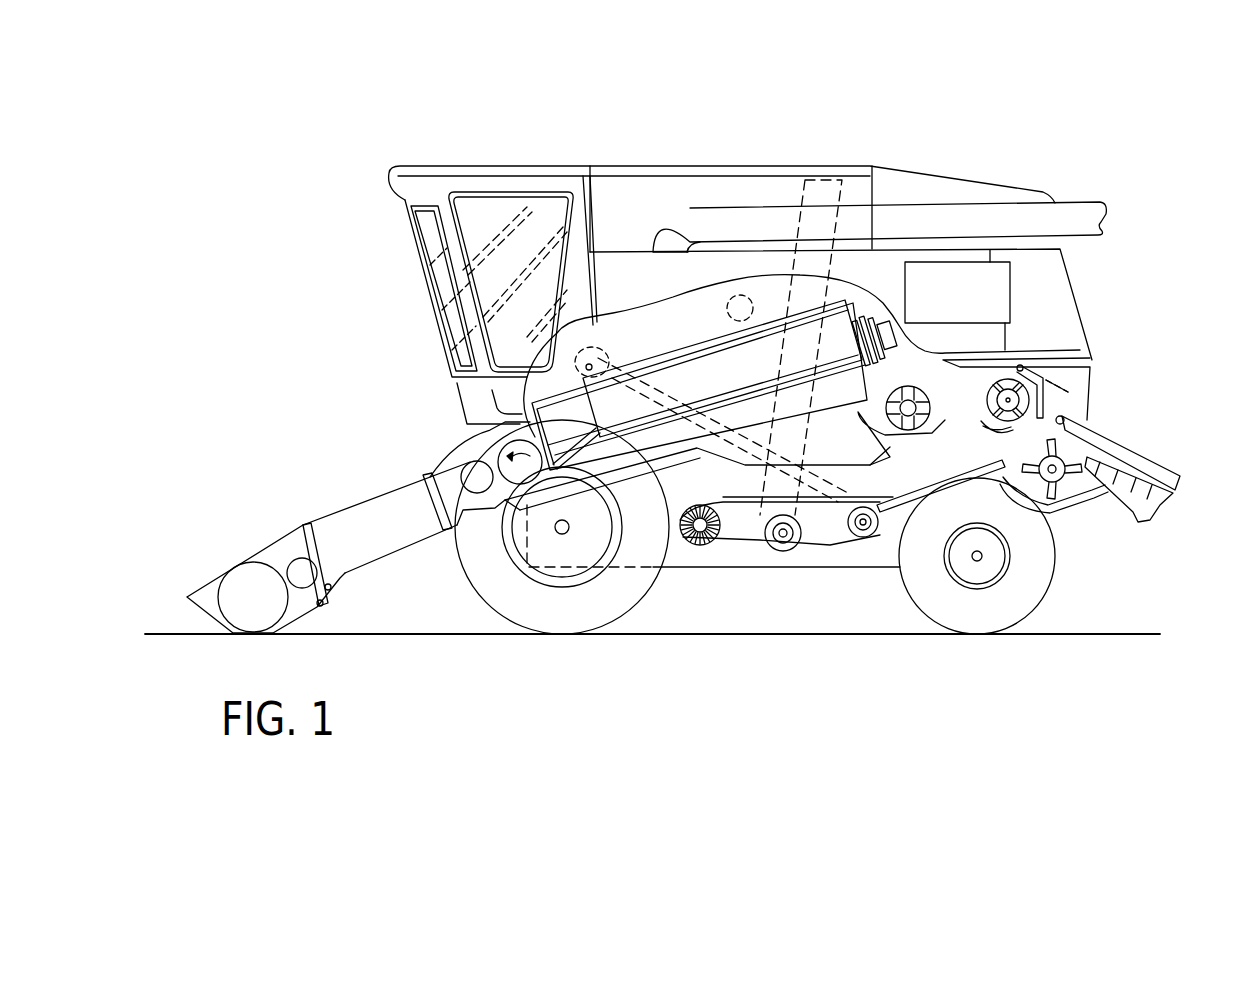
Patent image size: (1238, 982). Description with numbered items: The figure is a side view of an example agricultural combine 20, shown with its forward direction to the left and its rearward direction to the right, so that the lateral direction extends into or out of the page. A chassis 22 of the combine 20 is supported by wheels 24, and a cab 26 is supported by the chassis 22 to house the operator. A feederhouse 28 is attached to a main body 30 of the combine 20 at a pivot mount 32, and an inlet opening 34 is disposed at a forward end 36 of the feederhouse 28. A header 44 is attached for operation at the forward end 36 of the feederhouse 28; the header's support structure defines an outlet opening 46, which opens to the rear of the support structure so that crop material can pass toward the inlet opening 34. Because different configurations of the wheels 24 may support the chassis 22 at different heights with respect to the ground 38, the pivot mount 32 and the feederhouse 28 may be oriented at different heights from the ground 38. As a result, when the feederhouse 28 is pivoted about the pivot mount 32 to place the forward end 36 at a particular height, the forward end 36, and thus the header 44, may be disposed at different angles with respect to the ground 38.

The agricultural combine 20 is at (248, 185).
The chassis 22 is at (684, 490).
The wheels 24 is at (590, 603).
The cab 26 is at (490, 195).
The feederhouse 28 is at (380, 470).
The main body 30 is at (605, 142).
The pivot mount 32 is at (470, 487).
The inlet opening 34 is at (331, 550).
The forward end 36 is at (312, 523).
The ground 38 is at (733, 680).
The header 44 is at (298, 574).
The outlet opening 46 is at (238, 582).